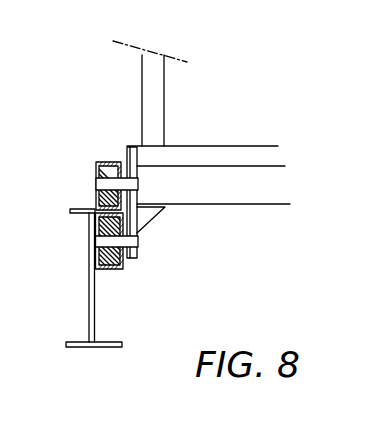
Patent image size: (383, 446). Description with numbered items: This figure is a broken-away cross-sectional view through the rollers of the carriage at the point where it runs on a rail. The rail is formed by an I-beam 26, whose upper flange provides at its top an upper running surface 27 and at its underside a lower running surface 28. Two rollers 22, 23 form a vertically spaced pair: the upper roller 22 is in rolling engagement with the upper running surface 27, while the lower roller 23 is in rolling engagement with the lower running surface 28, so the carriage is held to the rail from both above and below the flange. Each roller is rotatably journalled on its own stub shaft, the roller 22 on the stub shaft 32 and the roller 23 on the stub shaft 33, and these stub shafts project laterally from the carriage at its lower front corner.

The roller 22 is at (96, 170).
The stub shaft 32 is at (97, 187).
The upper running surface 27 is at (80, 210).
The lower running surface 28 is at (74, 214).
The stub shaft 33 is at (93, 243).
The roller 23 is at (93, 270).
The I-beam 26 is at (95, 323).